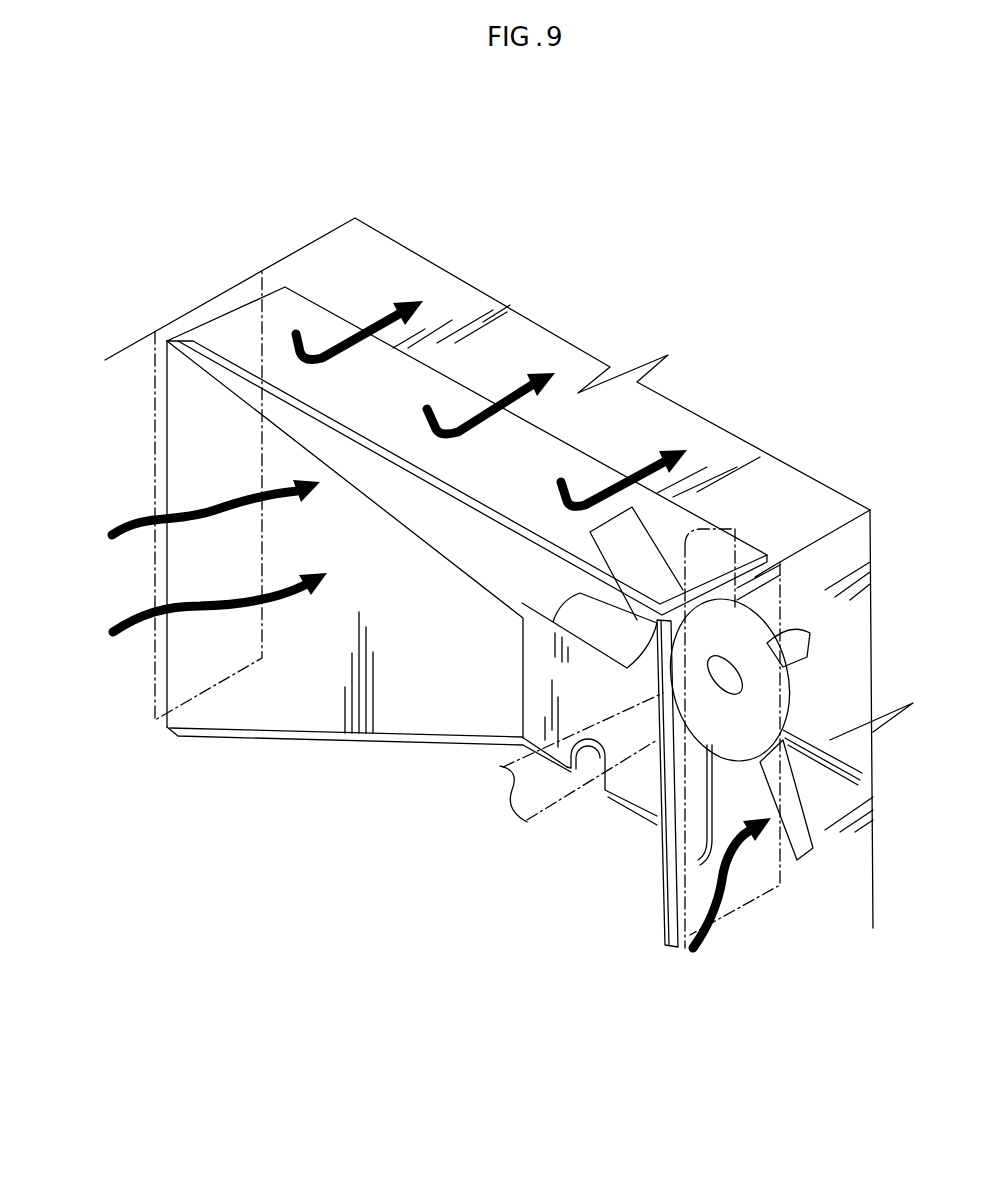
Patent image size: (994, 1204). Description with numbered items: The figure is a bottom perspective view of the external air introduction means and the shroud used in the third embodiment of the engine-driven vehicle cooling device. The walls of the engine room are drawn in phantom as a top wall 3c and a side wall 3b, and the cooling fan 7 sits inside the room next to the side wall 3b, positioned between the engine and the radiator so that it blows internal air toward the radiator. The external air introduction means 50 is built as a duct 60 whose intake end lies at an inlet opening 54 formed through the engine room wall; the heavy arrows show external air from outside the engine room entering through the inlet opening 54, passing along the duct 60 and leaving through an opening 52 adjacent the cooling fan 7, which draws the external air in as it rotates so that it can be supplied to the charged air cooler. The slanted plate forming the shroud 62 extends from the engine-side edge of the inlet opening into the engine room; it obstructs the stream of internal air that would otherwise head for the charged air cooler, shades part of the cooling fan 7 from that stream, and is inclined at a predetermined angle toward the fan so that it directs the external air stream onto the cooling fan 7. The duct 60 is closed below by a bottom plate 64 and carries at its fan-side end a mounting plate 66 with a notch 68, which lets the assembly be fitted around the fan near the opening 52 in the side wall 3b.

The top wall 3c is at (357, 253).
The side wall 3b is at (850, 852).
The discharge opening 50 is at (388, 387).
The outlet opening 52 is at (757, 872).
The inlet opening 54 is at (216, 582).
The duct 60 is at (400, 746).
The inclined guide plate 62 is at (360, 470).
The bottom plate 64 is at (267, 718).
The mounting plate 66 is at (660, 850).
The notch 68 is at (628, 787).
The fan 7 is at (777, 698).